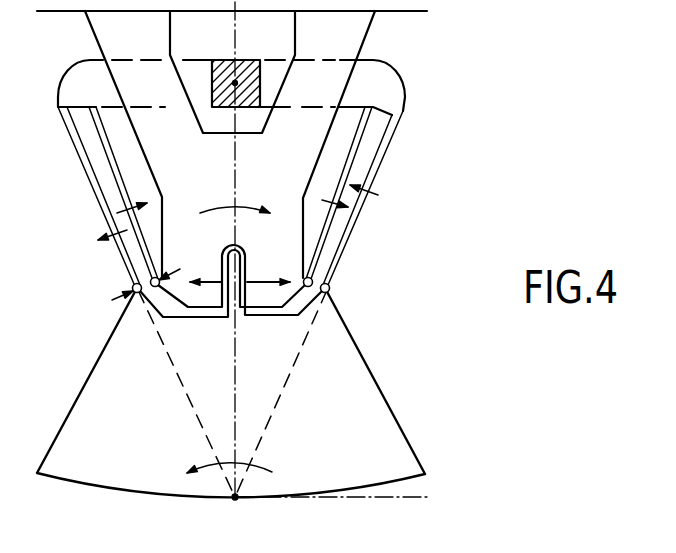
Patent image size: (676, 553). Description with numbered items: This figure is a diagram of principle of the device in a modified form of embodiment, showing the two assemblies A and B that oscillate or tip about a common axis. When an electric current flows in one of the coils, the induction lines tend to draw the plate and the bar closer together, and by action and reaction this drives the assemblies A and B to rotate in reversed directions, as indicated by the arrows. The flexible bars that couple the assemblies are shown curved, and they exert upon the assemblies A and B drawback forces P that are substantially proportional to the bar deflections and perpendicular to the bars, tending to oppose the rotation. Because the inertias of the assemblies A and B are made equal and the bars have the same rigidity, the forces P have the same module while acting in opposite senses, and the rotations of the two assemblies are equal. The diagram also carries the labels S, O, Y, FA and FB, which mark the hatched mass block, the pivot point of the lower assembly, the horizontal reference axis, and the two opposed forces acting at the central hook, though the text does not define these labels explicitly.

The assembly A is at (337, 424).
The assembly B is at (290, 165).
The center of gravity / mass block S is at (231, 72).
The drawback forces P is at (304, 279).
The pivot center of body A O is at (233, 500).
The horizontal reference axis Y is at (339, 498).
The force acting on body A FA is at (206, 270).
The force acting on body B FB is at (268, 270).